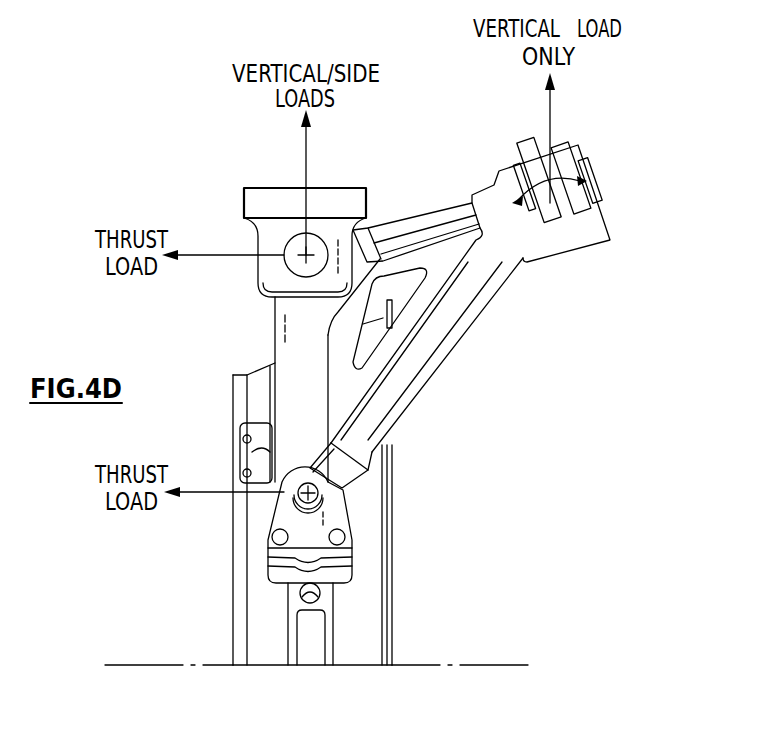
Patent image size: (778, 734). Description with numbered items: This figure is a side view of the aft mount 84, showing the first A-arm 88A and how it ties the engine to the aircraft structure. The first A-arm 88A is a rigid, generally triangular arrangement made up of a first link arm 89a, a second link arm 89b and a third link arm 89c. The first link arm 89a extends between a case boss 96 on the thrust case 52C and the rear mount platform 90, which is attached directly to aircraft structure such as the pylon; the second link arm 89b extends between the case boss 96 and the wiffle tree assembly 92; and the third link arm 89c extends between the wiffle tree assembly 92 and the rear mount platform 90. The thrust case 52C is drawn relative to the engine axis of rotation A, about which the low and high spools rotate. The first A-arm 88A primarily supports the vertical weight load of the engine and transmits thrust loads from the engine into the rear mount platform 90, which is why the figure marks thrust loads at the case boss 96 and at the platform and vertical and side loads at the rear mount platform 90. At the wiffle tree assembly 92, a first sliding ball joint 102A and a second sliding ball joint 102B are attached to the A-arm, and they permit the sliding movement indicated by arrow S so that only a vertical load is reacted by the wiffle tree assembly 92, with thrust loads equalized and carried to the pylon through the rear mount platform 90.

The rear mount platform 90 is at (324, 205).
The first link arm 89a is at (277, 351).
The second link arm 89b is at (439, 216).
The third link arm 89c is at (458, 318).
The wiffle tree assembly 92 is at (600, 135).
The first sliding ball joint 102A is at (590, 180).
The second sliding ball joint 102B is at (526, 160).
The arrow S is at (580, 181).
The aft mount 84 is at (526, 382).
The first A-arm 88A is at (448, 408).
The case boss 96 is at (332, 515).
The thrust case 52C is at (406, 560).
The engine axis of rotation A is at (497, 670).